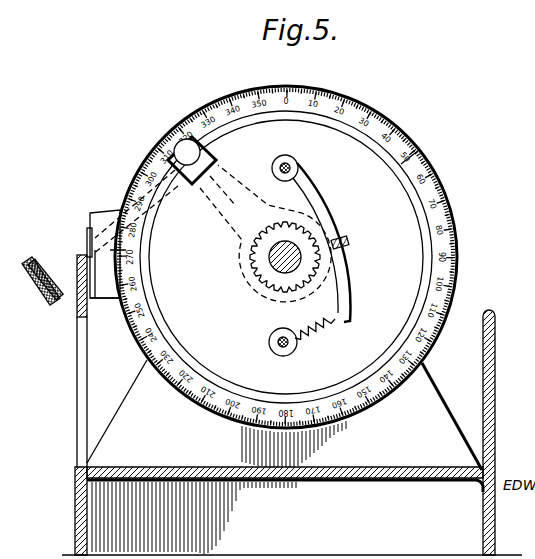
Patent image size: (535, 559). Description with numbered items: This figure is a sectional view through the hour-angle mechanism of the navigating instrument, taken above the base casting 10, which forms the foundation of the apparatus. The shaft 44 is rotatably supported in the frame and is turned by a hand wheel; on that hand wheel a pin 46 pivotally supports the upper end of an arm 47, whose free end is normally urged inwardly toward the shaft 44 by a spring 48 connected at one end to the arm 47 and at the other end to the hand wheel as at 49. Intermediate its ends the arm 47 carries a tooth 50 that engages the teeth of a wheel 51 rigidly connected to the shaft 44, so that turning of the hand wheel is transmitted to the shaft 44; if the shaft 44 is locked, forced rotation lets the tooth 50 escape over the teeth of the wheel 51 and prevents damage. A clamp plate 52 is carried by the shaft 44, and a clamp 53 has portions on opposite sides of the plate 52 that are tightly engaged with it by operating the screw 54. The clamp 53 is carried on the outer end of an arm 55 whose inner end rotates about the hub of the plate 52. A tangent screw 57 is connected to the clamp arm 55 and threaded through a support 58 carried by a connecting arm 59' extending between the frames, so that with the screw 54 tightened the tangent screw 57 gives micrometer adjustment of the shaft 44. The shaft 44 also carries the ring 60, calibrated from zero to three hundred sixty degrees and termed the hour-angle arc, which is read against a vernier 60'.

The base casting 10 is at (68, 525).
The shaft 44 is at (270, 262).
The pin 46 is at (297, 162).
The arm 47 is at (323, 206).
The spring 48 is at (312, 334).
The spring connection on hand wheel 49 is at (281, 356).
The tooth 50 is at (348, 242).
The wheel 51 is at (240, 248).
The clamp plate 52 is at (430, 150).
The clamp 53 is at (210, 162).
The screw 54 is at (200, 151).
The arm 55 is at (230, 190).
The tangent screw 57 is at (68, 256).
The support 58 is at (96, 218).
The connecting arm 59' is at (60, 361).
The ring 60 is at (469, 237).
The vernier 60' is at (105, 326).